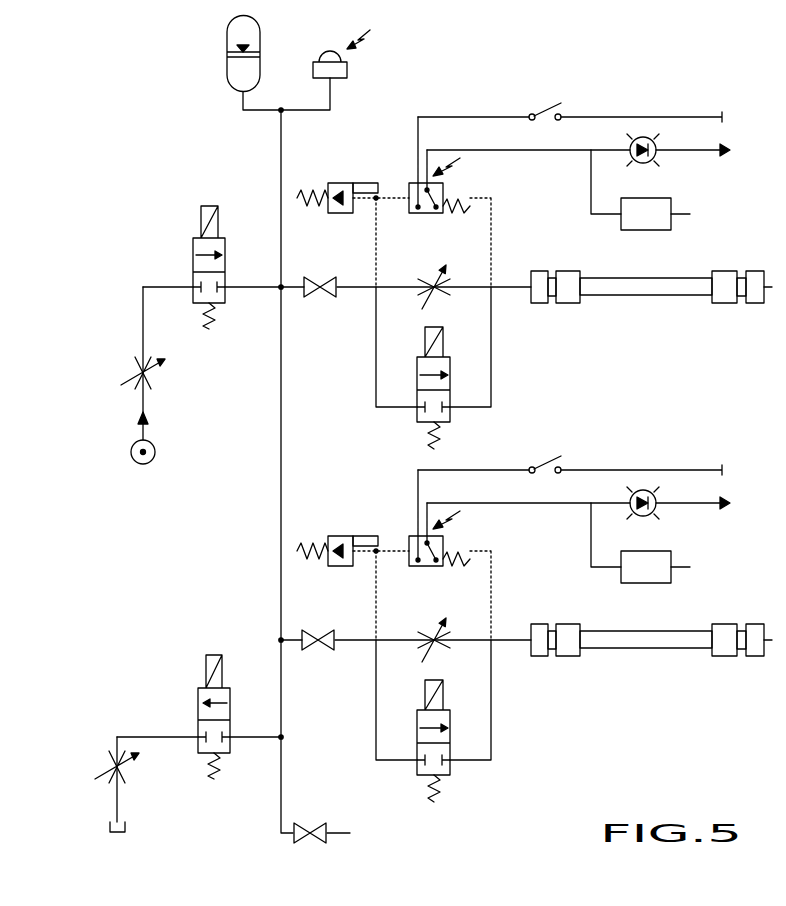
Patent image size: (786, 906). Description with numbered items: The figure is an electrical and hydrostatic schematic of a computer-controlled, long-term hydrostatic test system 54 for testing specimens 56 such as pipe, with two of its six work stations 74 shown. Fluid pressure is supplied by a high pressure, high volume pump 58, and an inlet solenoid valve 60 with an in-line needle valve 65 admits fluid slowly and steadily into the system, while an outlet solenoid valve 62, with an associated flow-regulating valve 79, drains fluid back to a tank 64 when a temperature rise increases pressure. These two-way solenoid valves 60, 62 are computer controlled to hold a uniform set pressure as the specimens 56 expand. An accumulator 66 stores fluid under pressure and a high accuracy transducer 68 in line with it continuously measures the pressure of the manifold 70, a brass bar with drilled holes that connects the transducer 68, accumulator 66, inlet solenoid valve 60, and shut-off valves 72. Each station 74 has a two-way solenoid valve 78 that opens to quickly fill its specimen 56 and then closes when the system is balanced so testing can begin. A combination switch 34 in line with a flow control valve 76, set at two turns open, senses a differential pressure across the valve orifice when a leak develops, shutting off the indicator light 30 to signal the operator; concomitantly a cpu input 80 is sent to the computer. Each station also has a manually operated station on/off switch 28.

The station on/off switch 28 is at (556, 106).
The indicator light 30 is at (648, 135).
The combination switch 34 is at (388, 170).
The computer-controlled long-term hydrostatic test system 54 is at (112, 429).
The test specimen 56 is at (645, 295).
The pump 58 is at (128, 457).
The inlet solenoid valve 60 is at (193, 250).
The outlet solenoid valve 62 is at (198, 710).
The tank 64 is at (108, 830).
The needle valve 65 is at (138, 370).
The accumulator 66 is at (227, 68).
The transducer 68 is at (347, 66).
The manifold 70 is at (376, 253).
The shut-off valve 72 is at (325, 292).
The test station 74 is at (520, 341).
The flow control valve 76 is at (428, 280).
The solenoid valve 78 is at (450, 418).
The valve 79 is at (108, 765).
The cpu input 80 is at (671, 205).